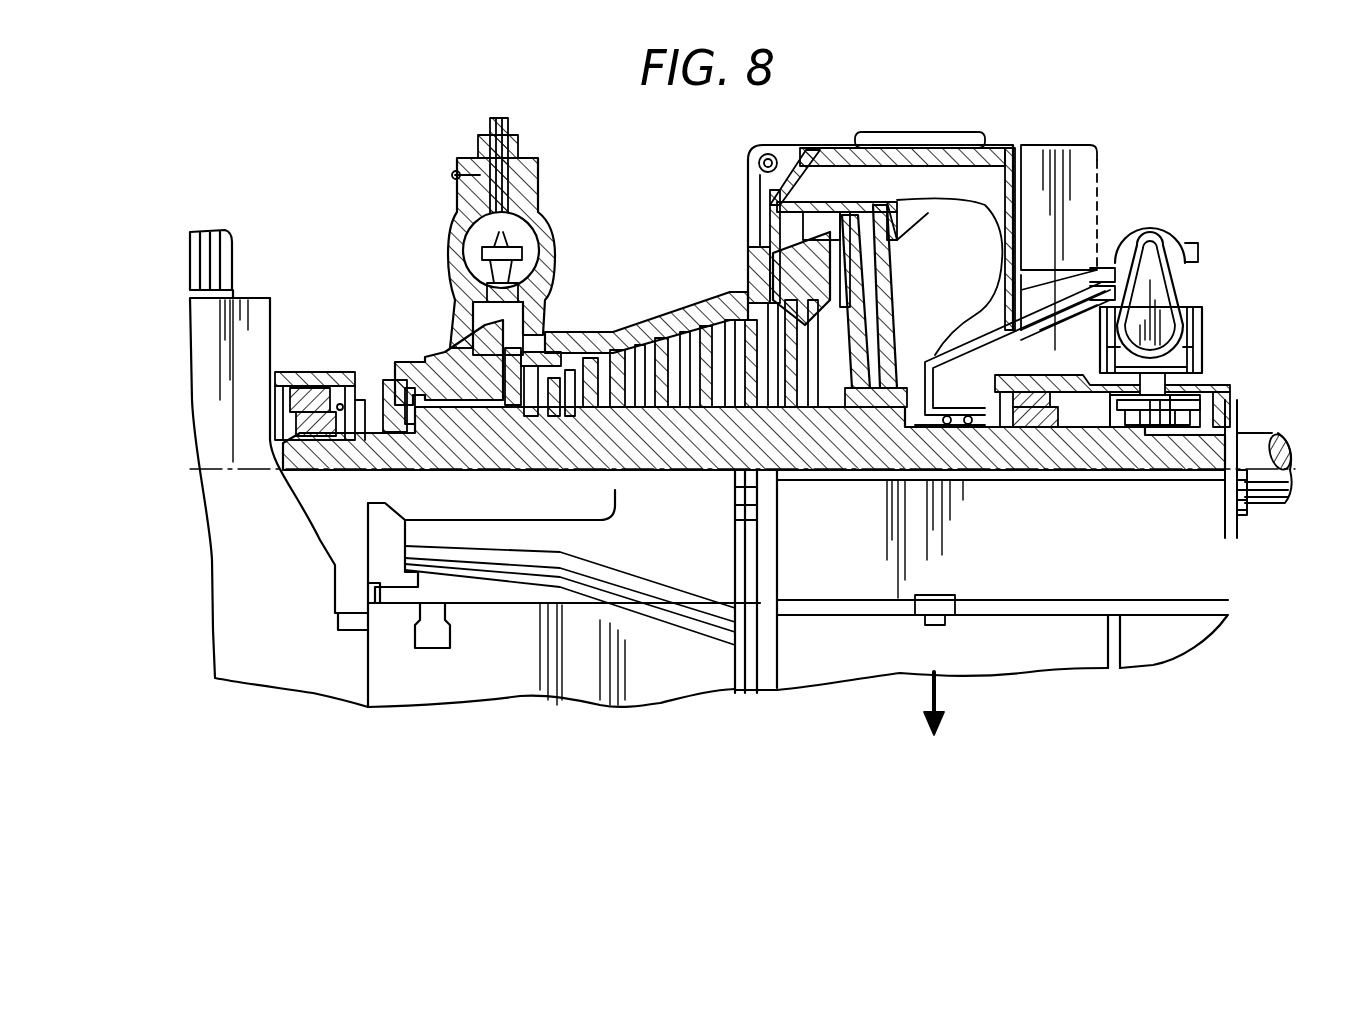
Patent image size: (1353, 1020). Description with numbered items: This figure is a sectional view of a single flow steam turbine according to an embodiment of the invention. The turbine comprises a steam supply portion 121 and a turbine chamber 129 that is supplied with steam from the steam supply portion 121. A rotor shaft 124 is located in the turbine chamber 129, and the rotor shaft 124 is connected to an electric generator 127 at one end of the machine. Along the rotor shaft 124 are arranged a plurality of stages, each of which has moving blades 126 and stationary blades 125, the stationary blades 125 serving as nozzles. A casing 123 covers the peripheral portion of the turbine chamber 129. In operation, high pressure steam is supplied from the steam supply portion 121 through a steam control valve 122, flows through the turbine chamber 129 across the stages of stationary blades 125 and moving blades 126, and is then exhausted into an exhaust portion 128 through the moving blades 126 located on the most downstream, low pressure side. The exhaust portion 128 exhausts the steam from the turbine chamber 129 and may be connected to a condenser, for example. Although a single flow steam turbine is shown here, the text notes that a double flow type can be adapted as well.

The steam supply portion 121 is at (490, 328).
The steam control valve 122 is at (548, 245).
The casing 123 is at (648, 318).
The rotor shaft 124 is at (667, 472).
The stationary blades 125 is at (878, 270).
The moving blades 126 is at (905, 340).
The electric generator 127 is at (250, 305).
The exhaust portion 128 is at (945, 688).
The turbine chamber 129 is at (545, 360).